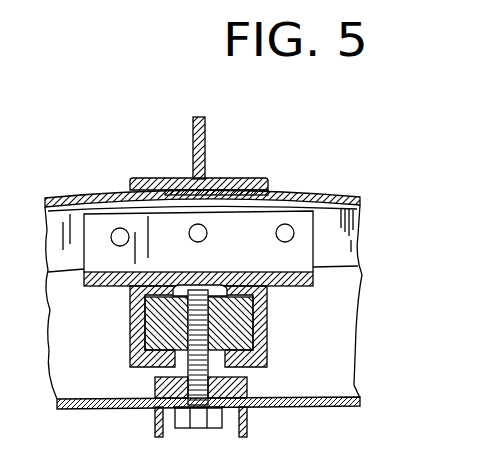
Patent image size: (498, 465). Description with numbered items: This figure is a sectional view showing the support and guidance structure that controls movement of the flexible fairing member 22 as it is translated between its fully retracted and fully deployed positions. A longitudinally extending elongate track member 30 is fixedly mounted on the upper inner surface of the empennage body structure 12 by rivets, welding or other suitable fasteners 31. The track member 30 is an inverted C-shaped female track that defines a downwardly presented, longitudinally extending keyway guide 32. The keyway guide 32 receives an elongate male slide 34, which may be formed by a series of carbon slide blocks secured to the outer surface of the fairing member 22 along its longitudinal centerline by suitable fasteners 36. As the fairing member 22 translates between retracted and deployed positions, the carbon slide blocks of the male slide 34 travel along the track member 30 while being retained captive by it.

The empennage body structure 12 is at (355, 223).
The fairing member 22 is at (310, 408).
The track member 30 is at (268, 327).
The fasteners 31 is at (113, 240).
The keyway guide 32 is at (224, 368).
The male slide 34 is at (147, 323).
The fasteners 36 is at (188, 366).